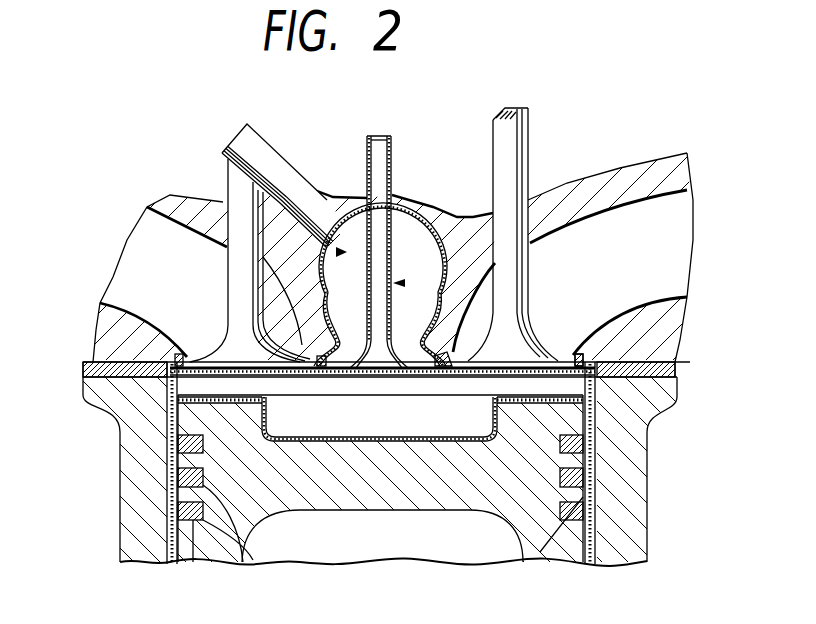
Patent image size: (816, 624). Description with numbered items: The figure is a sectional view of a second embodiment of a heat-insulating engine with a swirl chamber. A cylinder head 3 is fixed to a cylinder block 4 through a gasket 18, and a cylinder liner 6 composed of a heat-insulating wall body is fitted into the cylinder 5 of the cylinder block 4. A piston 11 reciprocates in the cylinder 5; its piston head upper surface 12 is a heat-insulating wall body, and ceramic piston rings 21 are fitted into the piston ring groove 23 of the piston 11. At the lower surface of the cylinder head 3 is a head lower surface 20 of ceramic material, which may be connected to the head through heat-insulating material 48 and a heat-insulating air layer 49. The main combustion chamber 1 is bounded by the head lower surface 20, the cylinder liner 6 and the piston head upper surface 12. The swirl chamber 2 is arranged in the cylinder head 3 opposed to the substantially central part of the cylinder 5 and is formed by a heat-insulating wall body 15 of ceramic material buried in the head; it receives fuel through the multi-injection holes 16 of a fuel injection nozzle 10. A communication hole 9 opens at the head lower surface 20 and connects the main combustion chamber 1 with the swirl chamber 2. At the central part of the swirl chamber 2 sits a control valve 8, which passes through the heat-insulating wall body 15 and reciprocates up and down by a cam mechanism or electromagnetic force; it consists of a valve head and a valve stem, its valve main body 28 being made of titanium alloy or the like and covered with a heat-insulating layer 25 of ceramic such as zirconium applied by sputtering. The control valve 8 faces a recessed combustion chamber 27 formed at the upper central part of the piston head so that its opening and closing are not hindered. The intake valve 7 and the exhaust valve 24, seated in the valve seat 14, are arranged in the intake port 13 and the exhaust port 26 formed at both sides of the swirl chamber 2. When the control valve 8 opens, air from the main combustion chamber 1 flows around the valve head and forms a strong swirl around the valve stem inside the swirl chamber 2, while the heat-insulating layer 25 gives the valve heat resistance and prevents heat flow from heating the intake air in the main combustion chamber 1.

The main combustion chamber 1 is at (590, 460).
The swirl chamber 2 is at (410, 243).
The cylinder head 3 is at (585, 192).
The cylinder block 4 is at (140, 428).
The cylinder 5 is at (185, 510).
The cylinder liner 6 is at (600, 441).
The intake valve 7 is at (535, 288).
The control valve 8 is at (447, 260).
The communication hole 9 is at (353, 374).
The fuel injection nozzle 10 is at (275, 153).
The piston 11 is at (395, 490).
The piston head upper surface 12 is at (337, 443).
The intake port 13 is at (675, 220).
The valve seat 14 is at (574, 352).
The heat-insulating wall body 15 is at (404, 283).
The multi-injection holes 16 is at (336, 251).
The gasket 18 is at (100, 368).
The head lower surface 20 is at (312, 377).
The piston rings 21 is at (253, 560).
The piston ring groove 23 is at (203, 566).
The exhaust valve 24 is at (228, 298).
The heat-insulating layer 25 is at (367, 163).
The exhaust port 26 is at (143, 267).
The combustion chamber at the piston 27 is at (423, 443).
The valve main body 28 is at (377, 138).
The heat-insulating material 48 is at (162, 332).
The heat-insulating air layer 49 is at (587, 352).